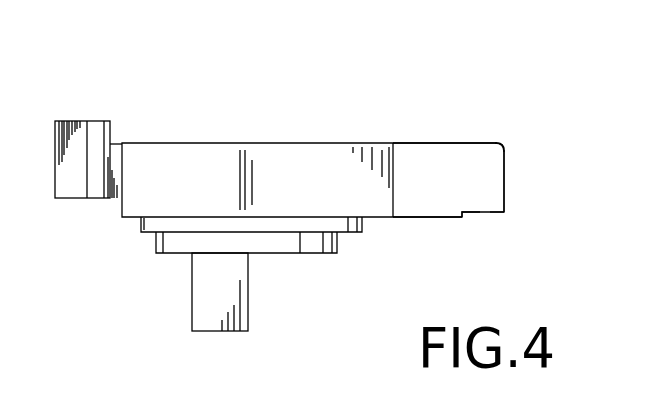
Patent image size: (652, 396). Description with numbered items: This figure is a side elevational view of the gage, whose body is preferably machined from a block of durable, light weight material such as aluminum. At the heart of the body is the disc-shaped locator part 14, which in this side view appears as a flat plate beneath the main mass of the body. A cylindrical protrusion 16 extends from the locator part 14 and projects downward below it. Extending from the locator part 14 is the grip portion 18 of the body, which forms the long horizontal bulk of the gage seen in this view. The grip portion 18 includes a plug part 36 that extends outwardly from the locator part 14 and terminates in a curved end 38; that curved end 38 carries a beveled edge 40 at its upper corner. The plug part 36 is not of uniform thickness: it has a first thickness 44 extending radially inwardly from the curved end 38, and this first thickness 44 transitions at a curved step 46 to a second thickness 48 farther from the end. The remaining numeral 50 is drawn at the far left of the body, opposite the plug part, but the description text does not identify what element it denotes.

The locator part 14 is at (157, 226).
The cylindrical protrusion 16 is at (183, 245).
The grip portion 18 is at (277, 170).
The plug part 36 is at (467, 141).
The curved end 38 is at (505, 173).
The beveled edge 40 is at (502, 142).
The first thickness 44 is at (485, 197).
The curved step 46 is at (463, 215).
The second thickness 48 is at (433, 200).
The knob 50 is at (78, 110).